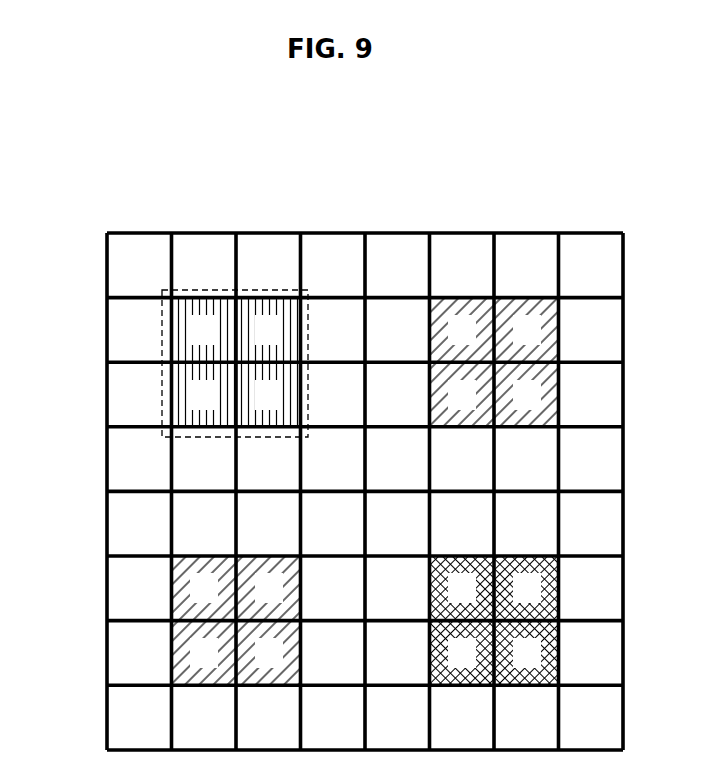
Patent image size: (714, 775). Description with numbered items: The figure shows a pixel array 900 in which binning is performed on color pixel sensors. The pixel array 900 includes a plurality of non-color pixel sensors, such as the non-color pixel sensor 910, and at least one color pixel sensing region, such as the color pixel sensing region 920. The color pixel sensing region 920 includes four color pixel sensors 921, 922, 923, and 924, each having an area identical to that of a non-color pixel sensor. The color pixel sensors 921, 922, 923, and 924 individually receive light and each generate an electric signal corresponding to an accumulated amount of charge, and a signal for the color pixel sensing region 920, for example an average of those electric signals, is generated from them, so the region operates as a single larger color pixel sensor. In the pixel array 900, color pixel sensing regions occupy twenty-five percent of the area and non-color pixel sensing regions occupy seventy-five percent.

The pixel array 900 is at (341, 143).
The non-color pixel sensor 910 is at (115, 268).
The color pixel sensing region 920 is at (210, 285).
The color pixel sensor 921 is at (177, 340).
The color pixel sensor 922 is at (290, 330).
The color pixel sensor 923 is at (177, 405).
The color pixel sensor 924 is at (297, 385).